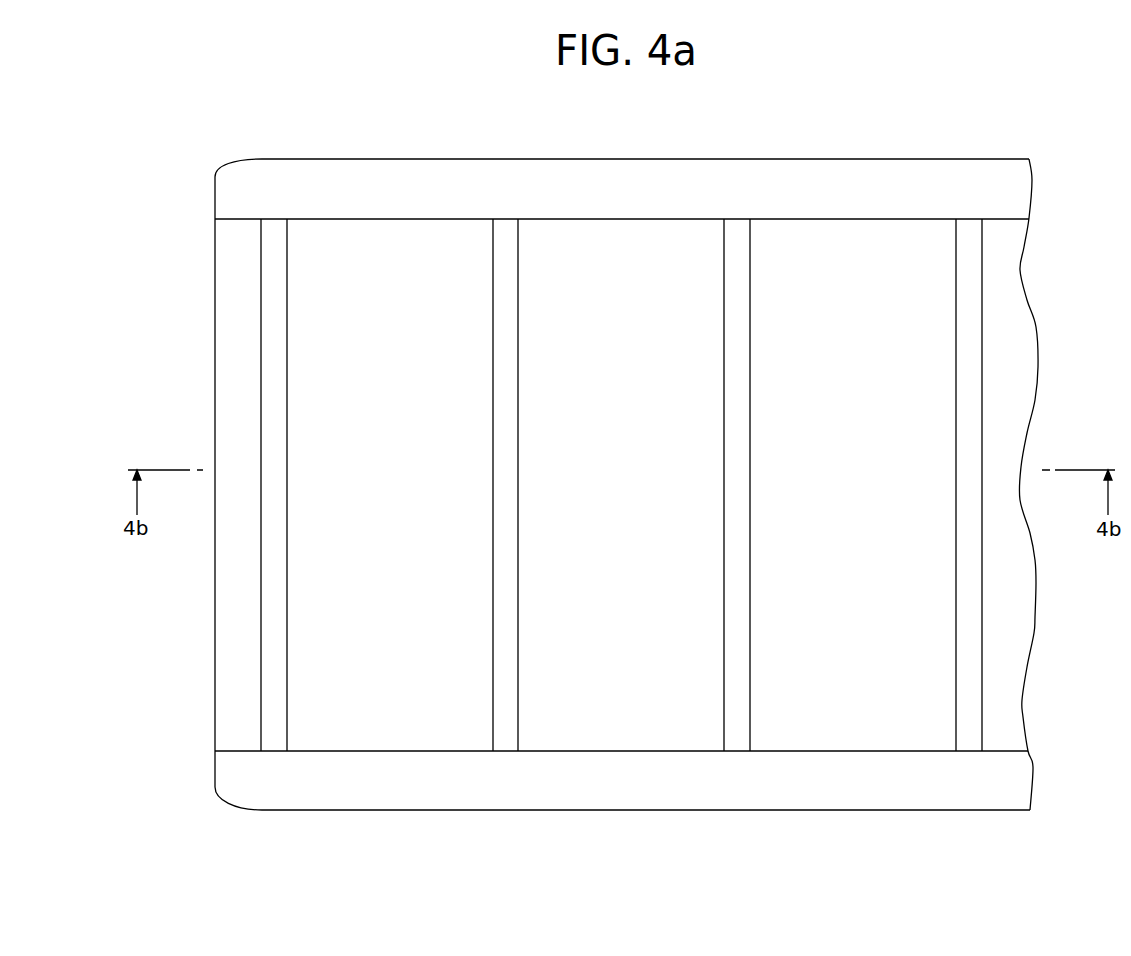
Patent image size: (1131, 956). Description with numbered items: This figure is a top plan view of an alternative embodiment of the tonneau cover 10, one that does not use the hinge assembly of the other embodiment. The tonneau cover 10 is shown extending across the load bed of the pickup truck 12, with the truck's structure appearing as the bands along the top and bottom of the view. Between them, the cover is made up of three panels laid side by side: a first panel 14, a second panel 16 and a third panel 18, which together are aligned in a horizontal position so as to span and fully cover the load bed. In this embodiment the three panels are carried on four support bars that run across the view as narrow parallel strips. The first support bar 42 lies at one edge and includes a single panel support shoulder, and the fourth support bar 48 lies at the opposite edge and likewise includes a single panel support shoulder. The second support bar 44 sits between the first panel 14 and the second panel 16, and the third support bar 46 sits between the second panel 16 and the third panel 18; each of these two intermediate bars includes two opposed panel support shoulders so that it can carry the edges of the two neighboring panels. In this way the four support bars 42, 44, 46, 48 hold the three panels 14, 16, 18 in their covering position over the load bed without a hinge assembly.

The tonneau cover 10 is at (255, 143).
The pickup truck 12 is at (937, 172).
The first panel 14 is at (393, 473).
The second panel 16 is at (637, 483).
The third panel 18 is at (872, 475).
The first support bar 42 is at (270, 702).
The second support bar 44 is at (506, 702).
The third support bar 46 is at (738, 709).
The fourth support bar 48 is at (972, 693).